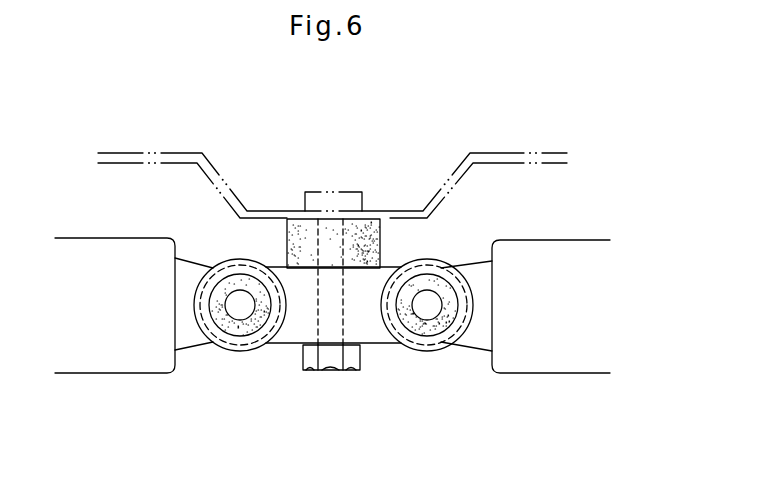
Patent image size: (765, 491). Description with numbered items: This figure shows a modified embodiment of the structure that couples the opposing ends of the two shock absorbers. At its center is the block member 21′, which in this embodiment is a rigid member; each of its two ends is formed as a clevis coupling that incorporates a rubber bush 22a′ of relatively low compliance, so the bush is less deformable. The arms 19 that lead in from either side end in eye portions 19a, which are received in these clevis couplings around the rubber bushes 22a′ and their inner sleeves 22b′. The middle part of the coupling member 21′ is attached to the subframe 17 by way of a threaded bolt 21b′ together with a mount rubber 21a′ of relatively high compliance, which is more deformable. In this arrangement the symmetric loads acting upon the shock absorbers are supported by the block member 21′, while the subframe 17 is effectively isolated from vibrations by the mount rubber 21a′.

The subframe 17 is at (518, 152).
The mount rubber 21a′ is at (381, 244).
The block member 21′ is at (371, 343).
The threaded bolt 21b′ is at (332, 362).
The arm 19 is at (144, 368).
The eye portion of arm 19a is at (260, 346).
The rubber bush 22a′ is at (234, 283).
The inner bushing sleeve 22b′ is at (237, 311).